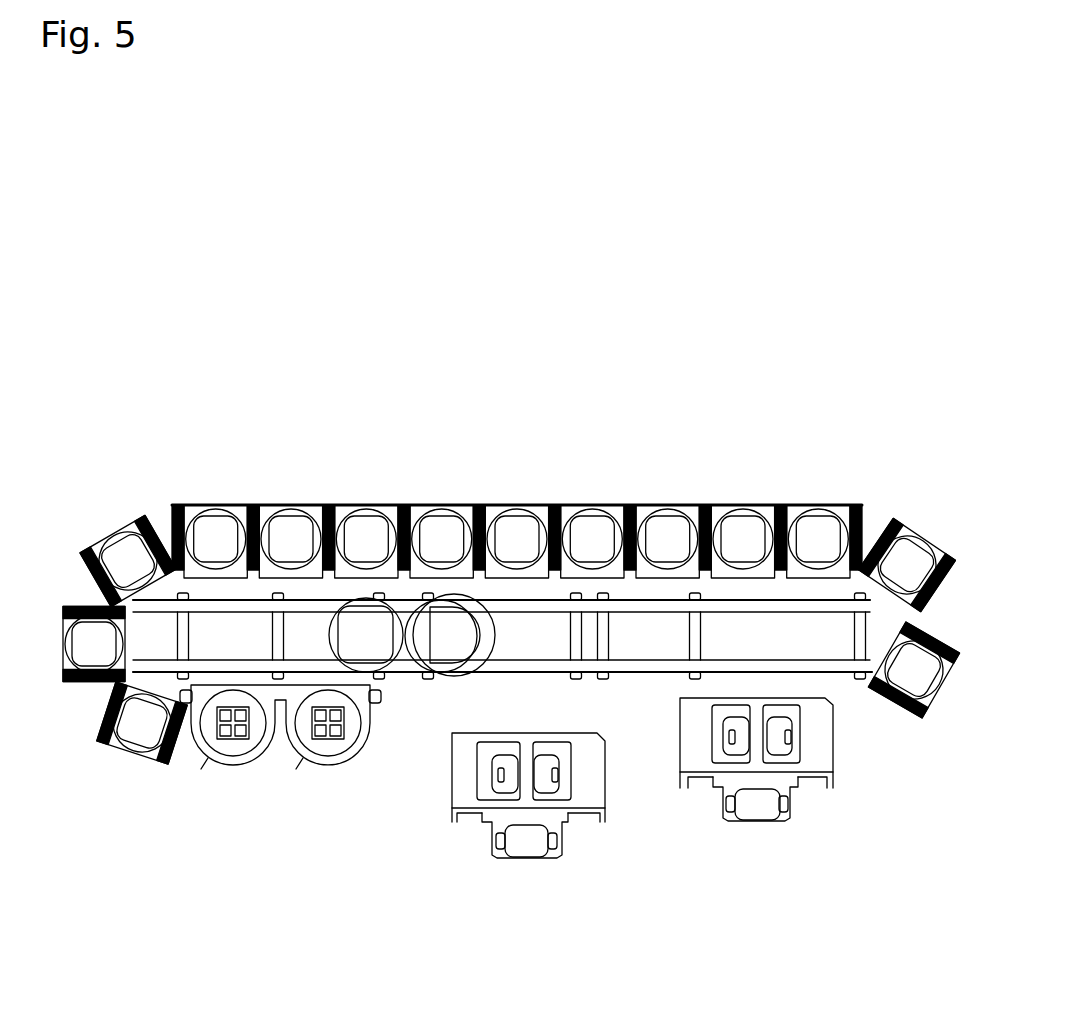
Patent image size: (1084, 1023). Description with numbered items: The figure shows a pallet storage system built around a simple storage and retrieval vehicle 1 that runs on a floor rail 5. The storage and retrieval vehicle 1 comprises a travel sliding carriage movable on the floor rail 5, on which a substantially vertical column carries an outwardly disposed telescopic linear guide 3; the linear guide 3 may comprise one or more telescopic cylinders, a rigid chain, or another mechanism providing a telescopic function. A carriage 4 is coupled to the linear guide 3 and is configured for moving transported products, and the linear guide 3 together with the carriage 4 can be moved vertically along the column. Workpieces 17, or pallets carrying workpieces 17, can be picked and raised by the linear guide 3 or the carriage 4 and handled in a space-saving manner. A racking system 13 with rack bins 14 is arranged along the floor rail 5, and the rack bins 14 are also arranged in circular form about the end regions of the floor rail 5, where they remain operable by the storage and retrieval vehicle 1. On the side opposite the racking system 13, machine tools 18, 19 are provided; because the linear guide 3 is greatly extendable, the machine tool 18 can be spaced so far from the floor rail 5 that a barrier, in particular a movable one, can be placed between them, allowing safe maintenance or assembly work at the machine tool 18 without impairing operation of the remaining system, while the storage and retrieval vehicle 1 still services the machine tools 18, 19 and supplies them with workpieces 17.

The storage and retrieval vehicle 1 is at (482, 615).
The linear guide 3 is at (445, 610).
The carriage 4 is at (345, 598).
The floor rail 5 is at (652, 665).
The racking system 13 is at (148, 518).
The rack bins 14 is at (213, 505).
The workpieces 17 is at (370, 623).
The machine tool 18 is at (467, 797).
The machine tool 19 is at (783, 807).